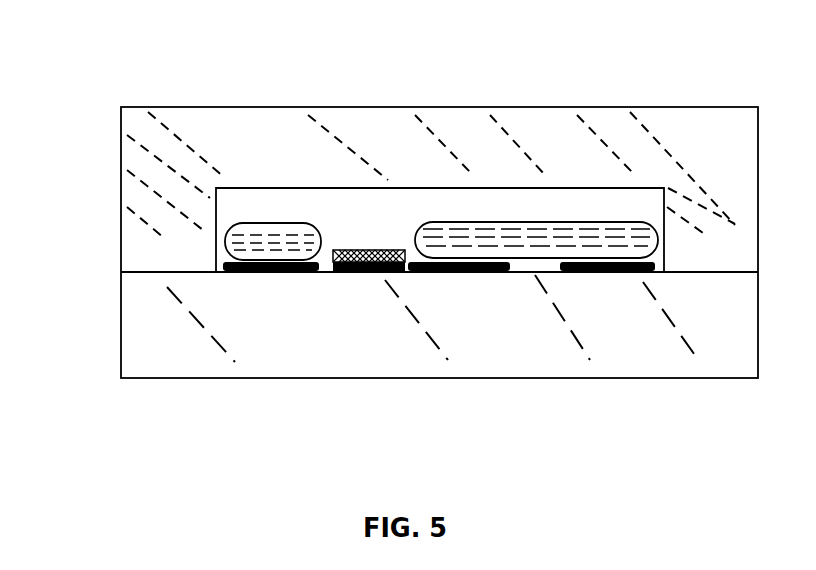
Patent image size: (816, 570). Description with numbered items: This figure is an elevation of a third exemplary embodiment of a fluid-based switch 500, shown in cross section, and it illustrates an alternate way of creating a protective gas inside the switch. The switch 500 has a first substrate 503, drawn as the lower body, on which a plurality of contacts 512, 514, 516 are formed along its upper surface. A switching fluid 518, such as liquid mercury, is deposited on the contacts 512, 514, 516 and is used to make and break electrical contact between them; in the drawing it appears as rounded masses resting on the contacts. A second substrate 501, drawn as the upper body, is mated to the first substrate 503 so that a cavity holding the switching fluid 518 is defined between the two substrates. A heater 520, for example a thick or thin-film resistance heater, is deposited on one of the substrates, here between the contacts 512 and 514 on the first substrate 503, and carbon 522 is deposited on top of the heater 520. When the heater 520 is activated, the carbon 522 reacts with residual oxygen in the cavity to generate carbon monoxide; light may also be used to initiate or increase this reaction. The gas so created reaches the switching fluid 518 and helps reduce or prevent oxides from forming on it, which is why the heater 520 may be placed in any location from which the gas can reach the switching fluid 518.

The switch 500 is at (88, 257).
The second substrate 501 is at (727, 138).
The first substrate 503 is at (733, 298).
The contact 512 is at (288, 272).
The contact 514 is at (463, 272).
The contact 516 is at (607, 272).
The switching fluid 518 is at (483, 232).
The heater 520 is at (353, 272).
The carbon 522 is at (352, 250).